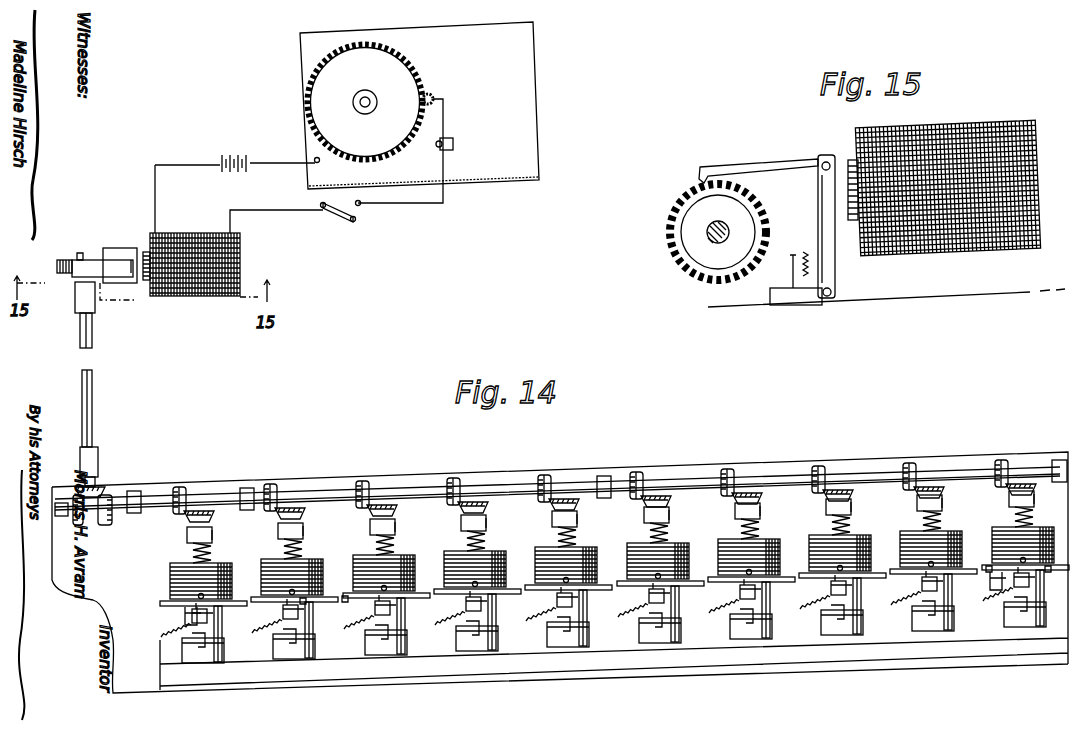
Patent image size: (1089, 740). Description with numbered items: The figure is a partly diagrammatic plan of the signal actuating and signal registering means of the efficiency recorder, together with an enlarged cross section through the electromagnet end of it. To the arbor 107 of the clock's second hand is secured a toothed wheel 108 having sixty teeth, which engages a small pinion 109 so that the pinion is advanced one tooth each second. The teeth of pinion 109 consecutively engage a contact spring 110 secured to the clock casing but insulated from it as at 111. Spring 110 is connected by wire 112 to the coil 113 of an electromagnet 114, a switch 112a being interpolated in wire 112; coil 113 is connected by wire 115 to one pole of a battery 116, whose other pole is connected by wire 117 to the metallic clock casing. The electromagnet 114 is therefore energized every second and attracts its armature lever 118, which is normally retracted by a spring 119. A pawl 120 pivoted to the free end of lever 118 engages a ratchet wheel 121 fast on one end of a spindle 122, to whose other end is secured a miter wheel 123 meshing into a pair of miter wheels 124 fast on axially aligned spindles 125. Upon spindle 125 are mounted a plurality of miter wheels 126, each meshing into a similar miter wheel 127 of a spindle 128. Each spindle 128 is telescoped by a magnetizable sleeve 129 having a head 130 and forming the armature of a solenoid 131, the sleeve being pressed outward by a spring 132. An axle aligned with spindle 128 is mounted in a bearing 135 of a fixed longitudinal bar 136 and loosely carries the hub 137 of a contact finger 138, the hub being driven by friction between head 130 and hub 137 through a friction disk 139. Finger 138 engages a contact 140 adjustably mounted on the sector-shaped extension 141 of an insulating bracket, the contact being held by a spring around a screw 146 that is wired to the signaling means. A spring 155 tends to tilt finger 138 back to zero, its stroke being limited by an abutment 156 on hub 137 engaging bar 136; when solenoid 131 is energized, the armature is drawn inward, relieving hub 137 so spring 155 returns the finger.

In FIG. 14, the arbor 107 is at (362, 110).
In FIG. 14, the toothed wheel 108 is at (390, 152).
In FIG. 14, the pinion 109 is at (431, 92).
In FIG. 14, the contact spring 110 is at (446, 117).
In FIG. 14, the insulation 111 is at (455, 145).
In FIG. 14, the wire 112 is at (405, 200).
In FIG. 14, the switch 112a is at (343, 222).
In FIG. 14, the coil 113 is at (200, 297).
In FIG. 15, the coil 113 is at (945, 125).
In FIG. 14, the electromagnet 114 is at (240, 247).
In FIG. 15, the electromagnet 114 is at (1040, 234).
In FIG. 14, the wire 115 is at (157, 210).
In FIG. 14, the battery 116 is at (246, 150).
In FIG. 14, the wire 117 is at (283, 160).
In FIG. 14, the armature lever 118 is at (128, 248).
In FIG. 15, the armature lever 118 is at (836, 270).
In FIG. 15, the spring 119 is at (805, 252).
In FIG. 14, the pawl 120 is at (93, 260).
In FIG. 15, the pawl 120 is at (738, 168).
In FIG. 14, the ratchet wheel 121 is at (63, 253).
In FIG. 15, the ratchet wheel 121 is at (686, 276).
In FIG. 14, the spindle 122 is at (92, 348).
In FIG. 15, the spindle 122 is at (714, 234).
In FIG. 14, the miter wheel 123 is at (107, 485).
In FIG. 14, the miter wheels 124 is at (105, 520).
In FIG. 14, the spindle 125 is at (63, 497).
In FIG. 14, the miter wheel 126 is at (192, 483).
In FIG. 14, the miter wheel 127 is at (387, 497).
In FIG. 14, the spindle 128 is at (392, 546).
In FIG. 14, the sleeve 129 is at (308, 608).
In FIG. 14, the head 130 is at (462, 603).
In FIG. 14, the solenoid 131 is at (540, 560).
In FIG. 14, the spring 132 is at (305, 550).
In FIG. 14, the bearing 135 is at (283, 648).
In FIG. 14, the longitudinal bar 136 is at (495, 638).
In FIG. 14, the hub 137 is at (575, 620).
In FIG. 14, the contact finger 138 is at (283, 618).
In FIG. 14, the friction disk 139 is at (182, 617).
In FIG. 14, the contact 140 is at (988, 578).
In FIG. 14, the sector-shaped extension 141 is at (342, 598).
In FIG. 14, the screw 146 is at (905, 550).
In FIG. 14, the spring 155 is at (173, 632).
In FIG. 14, the abutment 156 is at (187, 648).